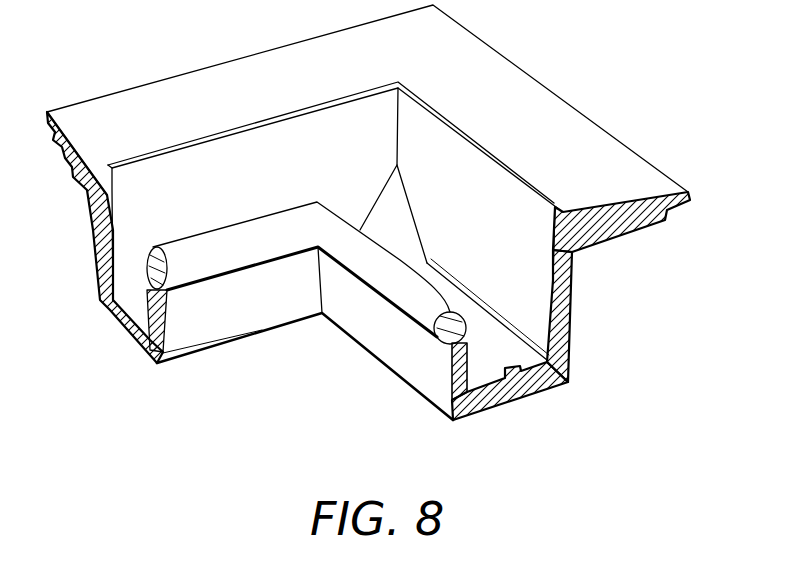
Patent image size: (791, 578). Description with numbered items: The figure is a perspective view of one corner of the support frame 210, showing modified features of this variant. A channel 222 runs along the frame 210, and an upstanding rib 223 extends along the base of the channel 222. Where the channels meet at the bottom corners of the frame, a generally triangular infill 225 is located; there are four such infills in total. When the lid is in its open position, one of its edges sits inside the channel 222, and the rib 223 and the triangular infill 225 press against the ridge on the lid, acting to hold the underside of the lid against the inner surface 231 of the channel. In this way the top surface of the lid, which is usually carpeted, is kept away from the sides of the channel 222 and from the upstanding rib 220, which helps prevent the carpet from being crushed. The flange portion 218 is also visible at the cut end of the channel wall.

The support frame 210 is at (215, 411).
The top flange 218 is at (628, 226).
The upstanding rib 220 is at (533, 182).
The channel 222 is at (530, 317).
The upstanding rib 223 is at (535, 378).
The triangular infill 225 is at (387, 211).
The inner surface of the channel 231 is at (447, 380).